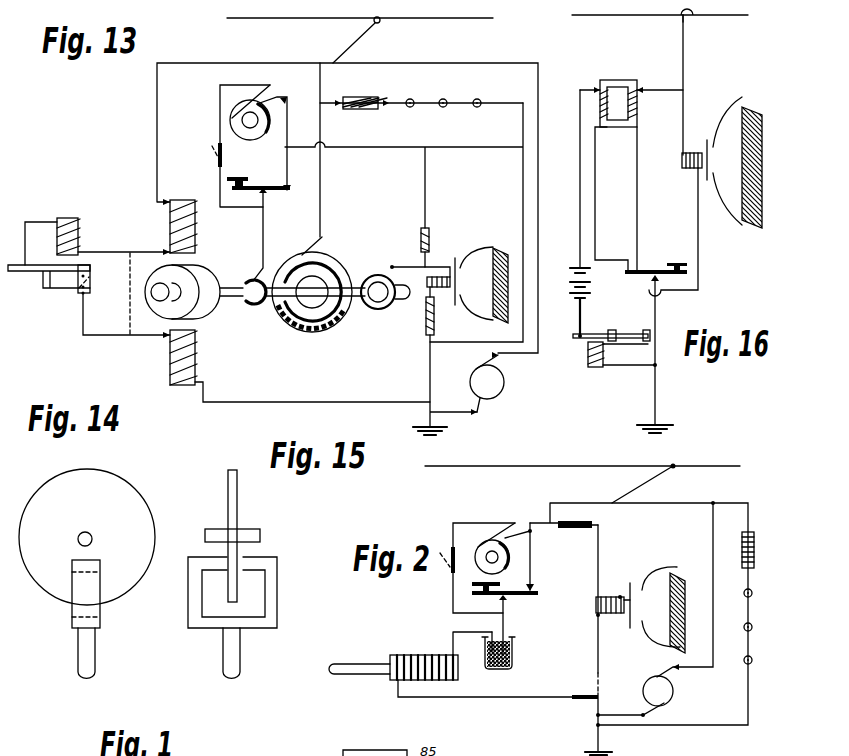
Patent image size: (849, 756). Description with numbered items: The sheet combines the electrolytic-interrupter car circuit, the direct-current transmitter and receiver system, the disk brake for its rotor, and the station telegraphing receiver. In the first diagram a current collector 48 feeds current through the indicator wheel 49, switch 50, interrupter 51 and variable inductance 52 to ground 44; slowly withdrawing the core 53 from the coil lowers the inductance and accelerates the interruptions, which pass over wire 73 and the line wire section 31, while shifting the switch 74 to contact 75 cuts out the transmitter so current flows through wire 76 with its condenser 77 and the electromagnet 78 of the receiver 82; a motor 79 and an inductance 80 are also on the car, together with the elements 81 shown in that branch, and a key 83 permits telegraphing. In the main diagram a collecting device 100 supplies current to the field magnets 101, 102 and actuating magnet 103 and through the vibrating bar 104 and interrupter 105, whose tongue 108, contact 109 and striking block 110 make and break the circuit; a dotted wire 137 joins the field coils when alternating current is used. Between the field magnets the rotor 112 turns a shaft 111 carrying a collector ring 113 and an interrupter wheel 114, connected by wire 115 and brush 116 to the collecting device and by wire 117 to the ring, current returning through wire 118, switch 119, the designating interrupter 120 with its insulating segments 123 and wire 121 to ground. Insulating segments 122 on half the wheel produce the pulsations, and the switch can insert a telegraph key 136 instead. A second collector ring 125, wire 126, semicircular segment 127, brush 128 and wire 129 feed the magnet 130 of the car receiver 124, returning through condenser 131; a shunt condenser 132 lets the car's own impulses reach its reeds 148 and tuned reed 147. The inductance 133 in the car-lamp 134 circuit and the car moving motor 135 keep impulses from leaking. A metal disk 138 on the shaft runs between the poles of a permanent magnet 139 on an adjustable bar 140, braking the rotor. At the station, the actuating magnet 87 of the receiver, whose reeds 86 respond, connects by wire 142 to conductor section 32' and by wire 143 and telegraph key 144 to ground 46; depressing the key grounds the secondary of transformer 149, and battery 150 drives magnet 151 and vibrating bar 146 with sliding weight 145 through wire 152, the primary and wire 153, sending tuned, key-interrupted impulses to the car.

In FIG. 13, the line wire section 31 is at (424, 19).
In FIG. 2, the line wire section 31 is at (589, 464).
In FIG. 13, the collecting device 100 is at (356, 42).
In FIG. 13, the field magnet 101 is at (168, 238).
In FIG. 13, the field magnet 102 is at (168, 371).
In FIG. 13, the actuating magnet 103 is at (97, 234).
In FIG. 13, the vibrating bar 104 is at (40, 272).
In FIG. 13, the interrupter 105 is at (91, 287).
In FIG. 13, the resilient metal tongue 108 is at (79, 290).
In FIG. 13, the contact 109 is at (83, 296).
In FIG. 13, the insulating striking block 110 is at (88, 275).
In FIG. 13, the shaft 111 is at (160, 284).
In FIG. 14, the shaft 111 is at (78, 539).
In FIG. 15, the shaft 111 is at (259, 538).
In FIG. 13, the rotor 112 is at (208, 302).
In FIG. 13, the collector ring 113 is at (249, 282).
In FIG. 13, the interrupter wheel 114 is at (318, 284).
In FIG. 13, the wire 115 is at (326, 193).
In FIG. 13, the brush 116 is at (299, 257).
In FIG. 13, the wire 117 is at (270, 300).
In FIG. 13, the wire 118 is at (263, 229).
In FIG. 13, the switch 119 is at (218, 165).
In FIG. 13, the designating interrupter 120 is at (247, 134).
In FIG. 13, the wire 121 is at (432, 147).
In FIG. 13, the insulating segments 122 is at (312, 332).
In FIG. 13, the insulating segments 123 is at (288, 104).
In FIG. 13, the receiver 124 is at (474, 283).
In FIG. 13, the second collector ring 125 is at (388, 302).
In FIG. 13, the wire 126 is at (362, 300).
In FIG. 13, the semi-circular segment 127 is at (346, 281).
In FIG. 13, the brush 128 is at (382, 272).
In FIG. 16, the brush 128 is at (655, 26).
In FIG. 13, the wire 129 is at (420, 265).
In FIG. 13, the magnet 130 is at (444, 293).
In FIG. 13, the condenser 131 is at (426, 328).
In FIG. 13, the condenser 132 is at (428, 248).
In FIG. 13, the inductance 133 is at (377, 96).
In FIG. 13, the car-lamps 134 is at (352, 99).
In FIG. 13, the car moving motor 135 is at (504, 384).
In FIG. 2, the car moving motor 135 is at (684, 590).
In FIG. 13, the telegraph key 136 is at (281, 191).
In FIG. 13, the wire 137 is at (130, 307).
In FIG. 13, the reed 147 is at (503, 319).
In FIG. 2, the reed 147 is at (684, 643).
In FIG. 13, the reeds 148 is at (502, 250).
In FIG. 16, the reeds 148 is at (637, 218).
In FIG. 13, the ground 44 is at (425, 439).
In FIG. 2, the ground 44 is at (610, 750).
In FIG. 16, the section of working conductor 32' is at (660, 20).
In FIG. 16, the wire 142 is at (684, 70).
In FIG. 16, the transformer 149 is at (635, 86).
In FIG. 16, the wire 152 is at (580, 222).
In FIG. 16, the wire 153 is at (602, 218).
In FIG. 16, the primary battery 150 is at (575, 279).
In FIG. 16, the telegraph key 144 is at (656, 340).
In FIG. 16, the wire 143 is at (697, 276).
In FIG. 16, the actuating magnet 87 is at (683, 170).
In FIG. 16, the receiver 82 is at (724, 161).
In FIG. 2, the receiver 82 is at (655, 607).
In FIG. 16, the reeds 86 is at (749, 110).
In FIG. 16, the sliding weight 145 is at (609, 333).
In FIG. 16, the vibrating bar 146 is at (627, 333).
In FIG. 16, the actuating magnet 151 is at (600, 369).
In FIG. 16, the ground 46 is at (661, 435).
In FIG. 14, the metal disk 138 is at (143, 526).
In FIG. 15, the metal disk 138 is at (237, 496).
In FIG. 14, the permanent magnet 139 is at (100, 613).
In FIG. 15, the permanent magnet 139 is at (277, 602).
In FIG. 14, the longitudinally adjustable bar 140 is at (78, 650).
In FIG. 15, the longitudinally adjustable bar 140 is at (223, 650).
In FIG. 2, the current collector 48 is at (655, 481).
In FIG. 2, the condenser 77 is at (585, 530).
In FIG. 2, the wire 76 is at (603, 563).
In FIG. 2, the electromagnet 78 is at (597, 612).
In FIG. 2, the contact 75 is at (600, 676).
In FIG. 2, the switch 74 is at (583, 701).
In FIG. 2, the wire 73 is at (474, 700).
In FIG. 2, the variable inductance 52 is at (424, 654).
In FIG. 2, the core 53 is at (360, 676).
In FIG. 2, the interrupter 51 is at (512, 658).
In FIG. 2, the key 83 is at (505, 616).
In FIG. 2, the indicator wheel 49 is at (507, 567).
In FIG. 2, the switch 50 is at (474, 568).
In FIG. 2, the inductance 80 is at (738, 550).
In FIG. 2, the contacts 81 is at (744, 627).
In FIG. 2, the motor 79 is at (673, 692).